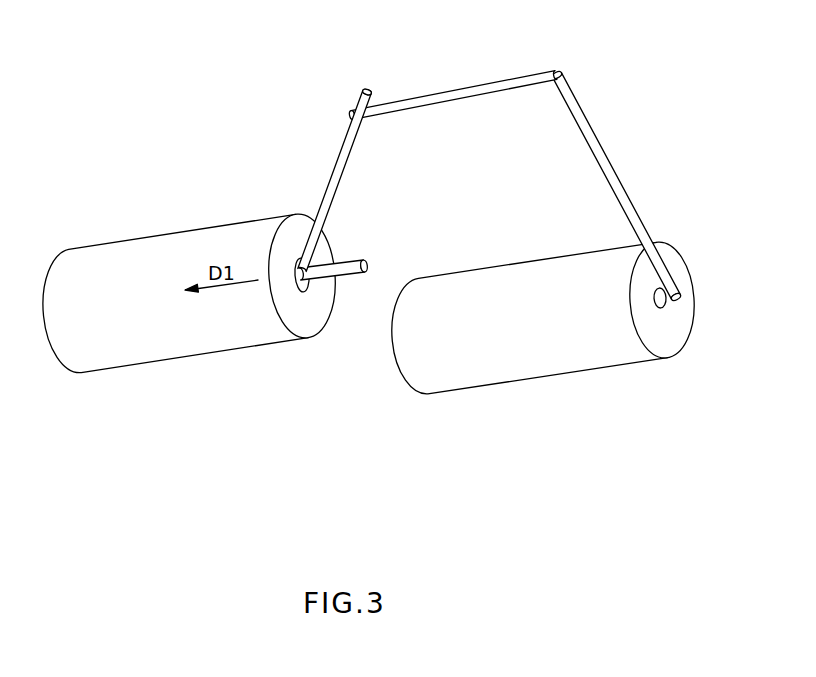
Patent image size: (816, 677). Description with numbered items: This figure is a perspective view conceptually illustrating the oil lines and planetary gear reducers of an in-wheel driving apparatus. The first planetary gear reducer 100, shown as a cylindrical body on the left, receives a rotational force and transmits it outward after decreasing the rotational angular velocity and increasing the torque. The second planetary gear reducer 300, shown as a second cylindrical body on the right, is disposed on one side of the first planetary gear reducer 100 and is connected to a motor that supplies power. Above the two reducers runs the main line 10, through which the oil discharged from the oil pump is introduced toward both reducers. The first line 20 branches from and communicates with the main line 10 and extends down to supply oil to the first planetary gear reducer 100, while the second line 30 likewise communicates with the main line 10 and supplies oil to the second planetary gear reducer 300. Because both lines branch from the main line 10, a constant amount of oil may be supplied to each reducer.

The main line 10 is at (361, 88).
The first line 20 is at (343, 163).
The second line 30 is at (436, 100).
The first planetary gear reducer 100 is at (239, 210).
The second planetary gear reducer 300 is at (521, 253).